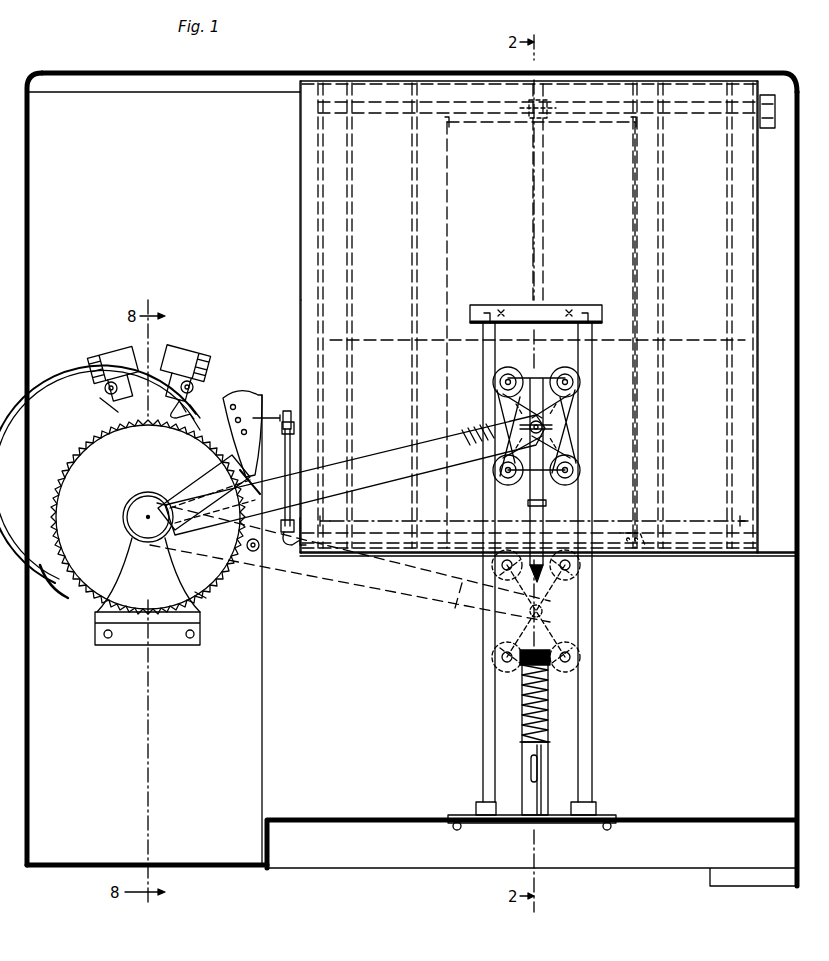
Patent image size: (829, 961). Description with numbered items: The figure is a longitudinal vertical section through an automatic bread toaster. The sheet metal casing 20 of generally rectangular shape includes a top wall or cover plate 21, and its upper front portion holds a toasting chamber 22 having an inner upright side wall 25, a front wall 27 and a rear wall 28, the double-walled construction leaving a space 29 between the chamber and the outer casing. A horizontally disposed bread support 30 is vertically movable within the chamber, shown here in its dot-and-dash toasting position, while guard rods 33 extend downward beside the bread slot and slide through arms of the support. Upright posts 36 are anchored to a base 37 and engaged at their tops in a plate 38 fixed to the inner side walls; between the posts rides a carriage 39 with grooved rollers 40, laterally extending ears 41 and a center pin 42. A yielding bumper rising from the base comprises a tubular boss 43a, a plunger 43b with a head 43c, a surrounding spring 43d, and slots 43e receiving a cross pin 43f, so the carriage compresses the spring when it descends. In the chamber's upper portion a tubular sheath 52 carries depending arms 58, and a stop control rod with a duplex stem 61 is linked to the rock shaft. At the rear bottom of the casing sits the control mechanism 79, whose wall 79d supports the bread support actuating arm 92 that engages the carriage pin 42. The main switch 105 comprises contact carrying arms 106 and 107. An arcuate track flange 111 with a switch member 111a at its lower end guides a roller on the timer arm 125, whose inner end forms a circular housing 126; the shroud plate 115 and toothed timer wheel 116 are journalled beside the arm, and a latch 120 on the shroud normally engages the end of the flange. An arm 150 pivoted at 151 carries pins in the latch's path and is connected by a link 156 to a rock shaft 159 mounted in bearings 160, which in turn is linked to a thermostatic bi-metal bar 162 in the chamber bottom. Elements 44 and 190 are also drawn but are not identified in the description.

The sheet metal casing 20 is at (65, 266).
The top wall or cover plate 21 is at (200, 72).
The toasting chamber 22 is at (299, 151).
The inner upright side wall 25 is at (490, 178).
The front wall 27 is at (758, 206).
The rear wall 28 is at (299, 284).
The space 29 is at (779, 552).
The bread support 30 is at (704, 340).
The guard rods 33 is at (412, 241).
The upright posts 36 is at (482, 658).
The base 37 is at (733, 824).
The plate 38 is at (600, 304).
The carriage 39 is at (551, 371).
The grooved rollers 40 is at (493, 378).
The laterally extending ears 41 is at (560, 393).
The center pin 42 is at (548, 429).
The tubular boss 43a is at (521, 770).
The plunger 43b is at (540, 720).
The head 43c is at (546, 655).
The spring 43d is at (546, 698).
The longitudinal slots 43e is at (538, 768).
The cross pin 43f is at (540, 752).
The stop 44 is at (545, 503).
The tubular-like sheath 52 is at (581, 128).
The arms 58 is at (634, 179).
The duplex stem 61 is at (545, 189).
The control mechanism 79 is at (76, 418).
The rear wall of mechanism casing 79d is at (258, 641).
The bread support actuating arm 92 is at (354, 481).
The main switch 105 is at (193, 341).
The contact carrying arm 106 is at (107, 379).
The contact carrying arm 107 is at (205, 360).
The track flange 111 is at (72, 448).
The switch member 111a is at (50, 582).
The shroud plate 115 is at (94, 438).
The timer wheel 116 is at (206, 592).
The latch 120 is at (196, 388).
The timer arm 125 is at (200, 472).
The circular housing 126 is at (153, 496).
The arm 150 is at (250, 392).
The pivot 151 is at (247, 548).
The link 156 is at (290, 415).
The rock shaft 159 is at (259, 483).
The bearings 160 is at (292, 426).
The thermostatic bi-metal bar 162 is at (378, 560).
The pedestal 190 is at (134, 558).